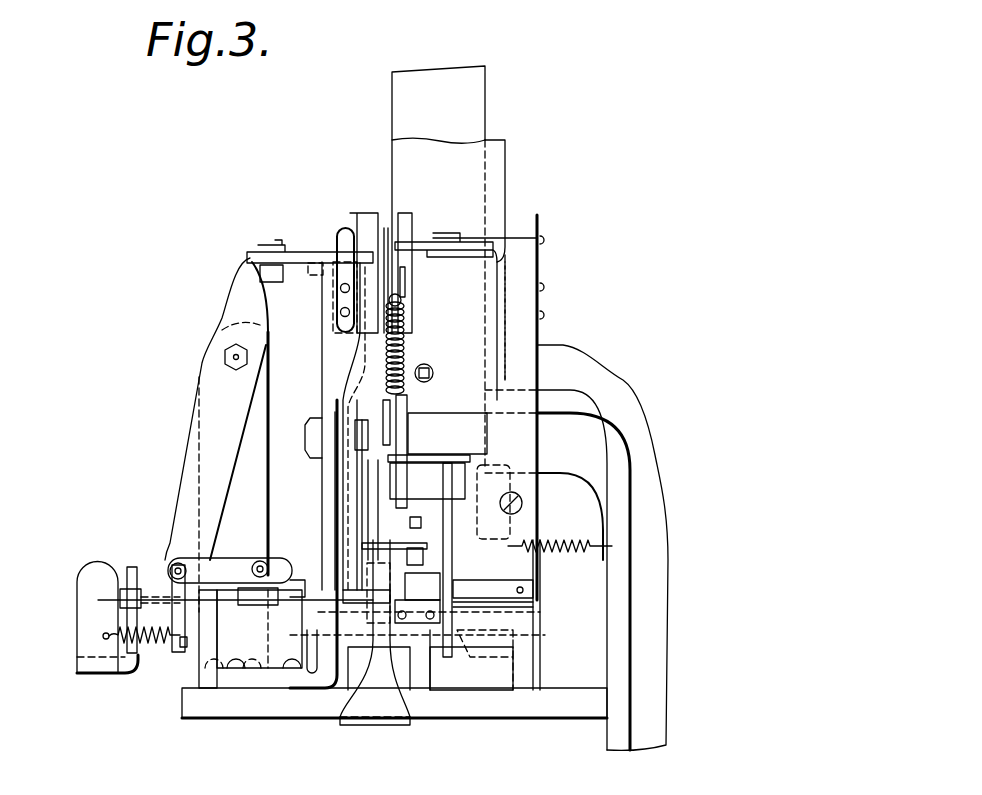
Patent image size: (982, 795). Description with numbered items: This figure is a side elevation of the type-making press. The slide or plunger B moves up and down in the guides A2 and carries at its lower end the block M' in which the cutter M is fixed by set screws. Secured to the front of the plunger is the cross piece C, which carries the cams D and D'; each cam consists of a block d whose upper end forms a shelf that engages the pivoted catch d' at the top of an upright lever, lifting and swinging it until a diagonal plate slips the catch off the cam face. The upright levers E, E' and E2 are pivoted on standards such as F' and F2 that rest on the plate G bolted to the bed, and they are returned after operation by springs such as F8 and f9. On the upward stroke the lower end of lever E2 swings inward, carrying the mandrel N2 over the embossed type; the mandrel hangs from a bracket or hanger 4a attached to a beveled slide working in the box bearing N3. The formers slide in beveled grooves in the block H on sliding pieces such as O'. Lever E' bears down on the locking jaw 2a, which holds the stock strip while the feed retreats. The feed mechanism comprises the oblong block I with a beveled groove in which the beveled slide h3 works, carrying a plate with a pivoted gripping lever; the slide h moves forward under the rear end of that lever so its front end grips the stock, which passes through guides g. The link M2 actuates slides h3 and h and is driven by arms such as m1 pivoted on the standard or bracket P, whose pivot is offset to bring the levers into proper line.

The slide or plunger B is at (488, 116).
The guides A2 is at (507, 195).
The upright lever E' is at (550, 482).
The cam D is at (334, 252).
The cam block d is at (390, 252).
The cross piece C is at (386, 228).
The cam D' is at (450, 283).
The pivoted lever catch d' is at (357, 266).
The feed lever m1 is at (403, 445).
The block M' is at (525, 485).
The return spring f9 is at (580, 548).
The cutter M is at (448, 560).
The guides g is at (415, 622).
The locking piece or jaw 2a is at (520, 586).
The slide h is at (520, 605).
The link M2 is at (468, 586).
The beveled slide h3 is at (487, 648).
The oblong block I is at (467, 675).
The block H is at (340, 682).
The standard or bracket P is at (383, 735).
The sliding piece O' is at (364, 604).
The plate G is at (516, 712).
The mandrel N2 is at (256, 603).
The beveled box bearing N3 is at (285, 665).
The return spring F8 is at (162, 650).
The bracket or hanger 4a is at (238, 562).
The upright lever E2 is at (234, 303).
The standard F2 is at (267, 518).
The upright lever E is at (331, 426).
The standard F' is at (325, 501).